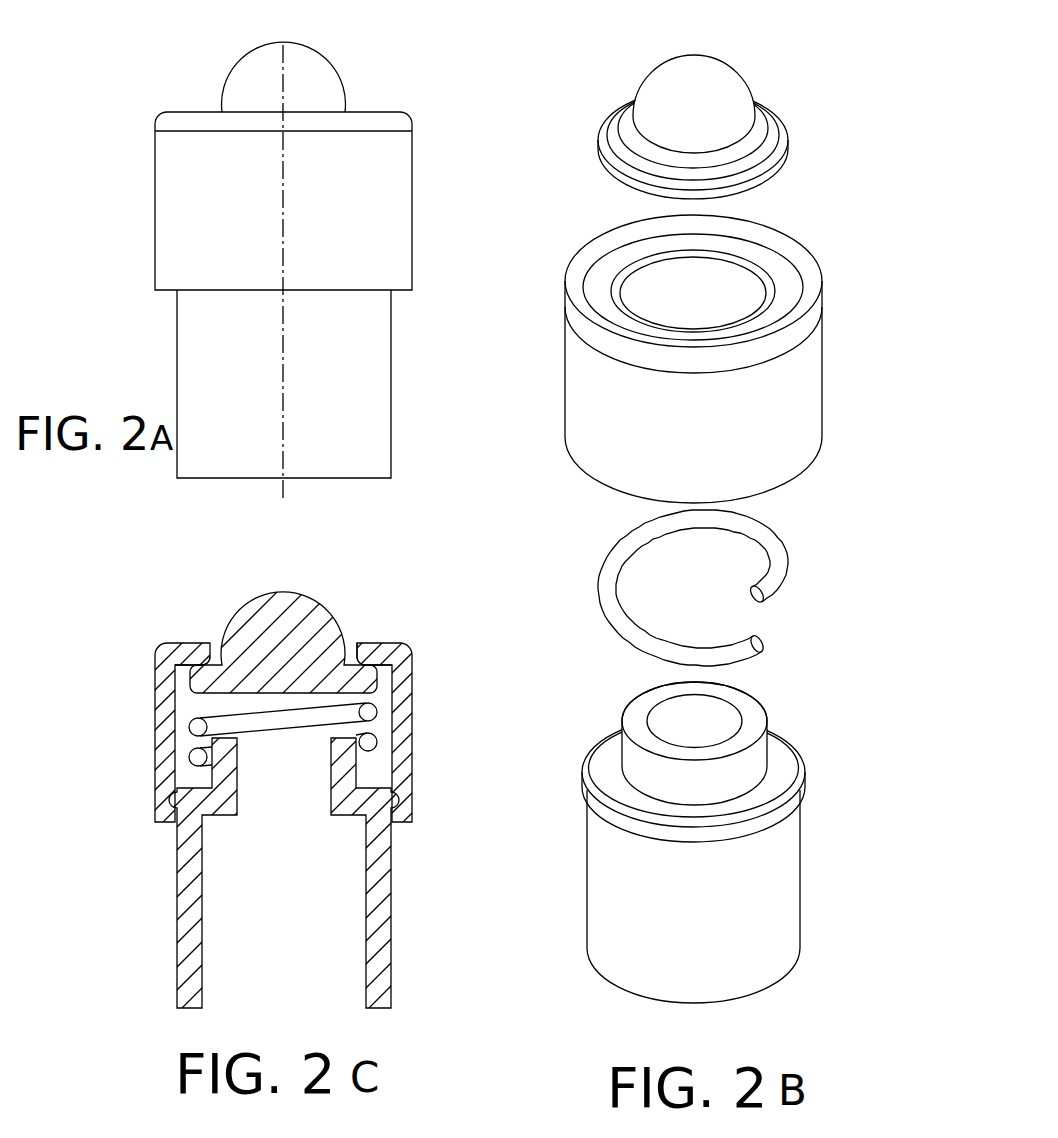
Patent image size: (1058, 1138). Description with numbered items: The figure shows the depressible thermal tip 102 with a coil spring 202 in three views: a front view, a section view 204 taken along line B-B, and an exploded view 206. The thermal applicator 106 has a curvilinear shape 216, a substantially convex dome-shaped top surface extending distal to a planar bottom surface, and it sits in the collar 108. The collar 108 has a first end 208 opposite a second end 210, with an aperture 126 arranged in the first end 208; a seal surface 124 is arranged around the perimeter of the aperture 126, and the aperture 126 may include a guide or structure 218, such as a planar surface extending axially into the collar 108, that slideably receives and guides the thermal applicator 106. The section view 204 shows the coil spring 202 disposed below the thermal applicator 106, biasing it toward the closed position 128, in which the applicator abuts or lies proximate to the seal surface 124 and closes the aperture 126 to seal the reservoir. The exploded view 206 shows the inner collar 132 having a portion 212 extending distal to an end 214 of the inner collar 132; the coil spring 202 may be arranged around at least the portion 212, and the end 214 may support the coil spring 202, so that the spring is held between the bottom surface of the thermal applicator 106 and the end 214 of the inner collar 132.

In FIG. 2A, the depressible thermal tip 102 is at (240, 264).
In FIG. 2A, the thermal applicator 106 is at (207, 74).
In FIG. 2C, the thermal applicator 106 is at (528, 550).
In FIG. 2B, the thermal applicator 106 is at (615, 104).
In FIG. 2A, the collar 108 is at (240, 201).
In FIG. 2C, the collar 108 is at (529, 550).
In FIG. 2B, the collar 108 is at (648, 336).
In FIG. 2C, the seal surface 124 is at (425, 633).
In FIG. 2C, the aperture 126 is at (422, 610).
In FIG. 2B, the aperture 126 is at (620, 270).
In FIG. 2C, the closed position 128 is at (137, 643).
In FIG. 2A, the inner collar 132 is at (232, 384).
In FIG. 2C, the inner collar 132 is at (529, 550).
In FIG. 2B, the inner collar 132 is at (651, 842).
In FIG. 2C, the coil spring 202 is at (331, 726).
In FIG. 2B, the coil spring 202 is at (645, 588).
In FIG. 2C, the section view 204 is at (529, 550).
In FIG. 2B, the exploded view 206 is at (671, 504).
In FIG. 2B, the first end 208 is at (648, 294).
In FIG. 2B, the second end 210 is at (648, 392).
In FIG. 2B, the portion 212 is at (632, 743).
In FIG. 2B, the end 214 is at (651, 779).
In FIG. 2B, the curvilinear shape 216 is at (671, 105).
In FIG. 2B, the guide or structure 218 is at (625, 250).